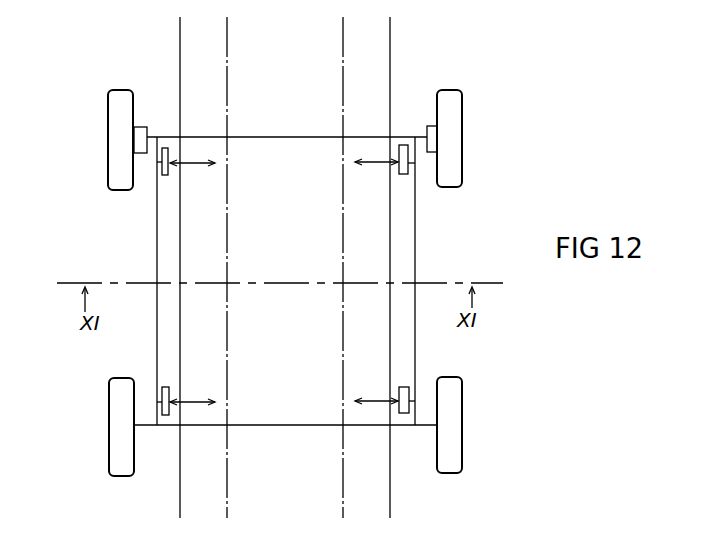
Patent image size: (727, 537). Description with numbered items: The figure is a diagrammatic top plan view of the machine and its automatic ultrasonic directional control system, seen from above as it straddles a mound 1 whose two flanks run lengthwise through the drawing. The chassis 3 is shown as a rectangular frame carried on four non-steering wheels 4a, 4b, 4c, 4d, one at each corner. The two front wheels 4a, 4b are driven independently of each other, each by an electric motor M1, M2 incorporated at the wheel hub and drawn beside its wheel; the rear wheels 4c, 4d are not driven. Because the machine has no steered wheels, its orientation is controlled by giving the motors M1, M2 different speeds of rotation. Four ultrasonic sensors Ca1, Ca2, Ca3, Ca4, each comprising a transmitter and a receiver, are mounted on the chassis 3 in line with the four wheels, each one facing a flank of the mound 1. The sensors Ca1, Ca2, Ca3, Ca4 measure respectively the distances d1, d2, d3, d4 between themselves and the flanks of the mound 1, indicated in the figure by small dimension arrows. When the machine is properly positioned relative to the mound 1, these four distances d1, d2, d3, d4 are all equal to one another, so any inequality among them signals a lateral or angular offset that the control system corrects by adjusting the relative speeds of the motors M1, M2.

The mound 1 is at (373, 42).
The chassis 3 is at (155, 229).
The front wheel 4a is at (117, 105).
The front wheel 4b is at (452, 107).
The rear wheel 4c is at (118, 443).
The rear wheel 4d is at (452, 413).
The electric motor M1 is at (141, 124).
The electric motor M2 is at (429, 123).
The ultrasonic sensor Ca1 is at (166, 145).
The ultrasonic sensor Ca2 is at (402, 143).
The ultrasonic sensor Ca3 is at (167, 418).
The ultrasonic sensor Ca4 is at (403, 416).
The distance d1 is at (192, 174).
The distance d2 is at (376, 174).
The distance d3 is at (192, 391).
The distance d4 is at (376, 389).